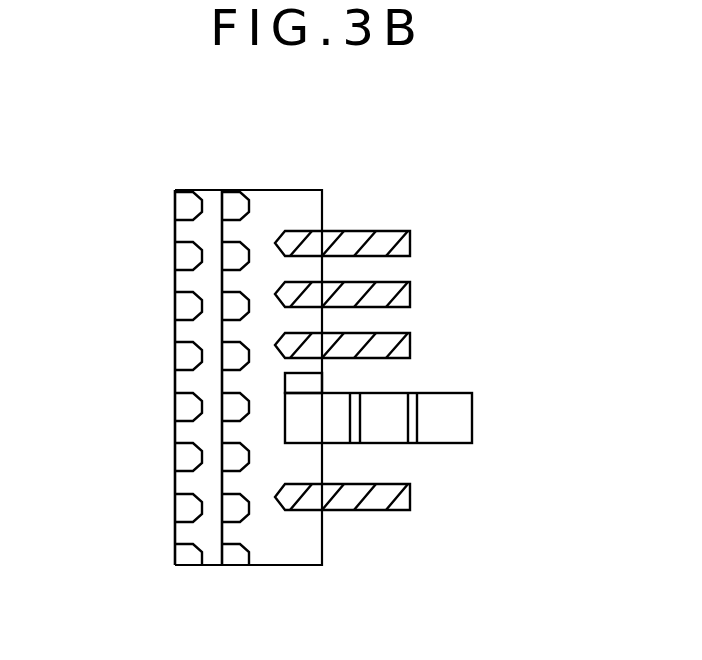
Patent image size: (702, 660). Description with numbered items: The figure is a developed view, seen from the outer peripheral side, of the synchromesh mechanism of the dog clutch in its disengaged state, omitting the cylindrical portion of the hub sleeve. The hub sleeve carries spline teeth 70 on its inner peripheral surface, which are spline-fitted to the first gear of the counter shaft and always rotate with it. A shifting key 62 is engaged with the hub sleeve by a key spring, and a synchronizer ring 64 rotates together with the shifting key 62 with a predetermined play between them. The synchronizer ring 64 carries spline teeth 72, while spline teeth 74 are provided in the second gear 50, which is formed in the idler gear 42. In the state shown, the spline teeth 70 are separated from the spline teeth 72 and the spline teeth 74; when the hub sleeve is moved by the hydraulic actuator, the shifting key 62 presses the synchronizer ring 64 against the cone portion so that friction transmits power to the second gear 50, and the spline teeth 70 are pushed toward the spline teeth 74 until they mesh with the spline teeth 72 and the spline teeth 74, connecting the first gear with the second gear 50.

The idler gear 42 is at (165, 546).
The second gear 50 is at (215, 546).
The shifting key 62 is at (453, 418).
The synchronizer ring 64 is at (268, 540).
The spline teeth of the hub sleeve 70 is at (383, 291).
The spline teeth of the synchronizer ring 72 is at (237, 204).
The spline teeth of the second gear 74 is at (190, 204).